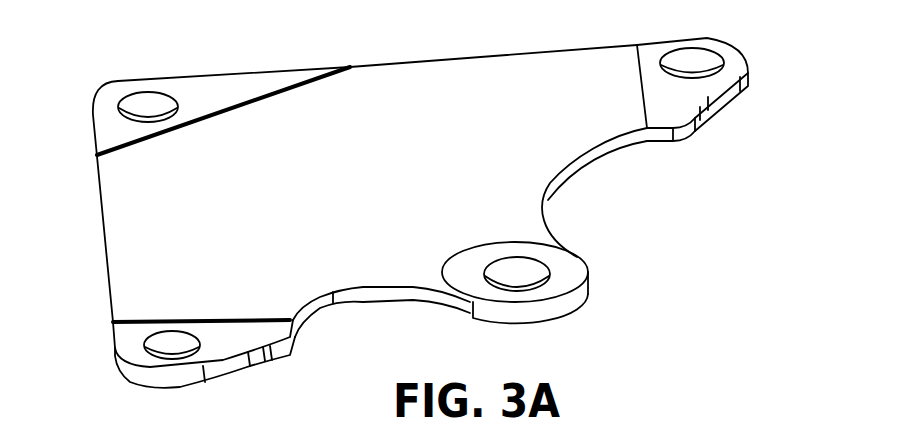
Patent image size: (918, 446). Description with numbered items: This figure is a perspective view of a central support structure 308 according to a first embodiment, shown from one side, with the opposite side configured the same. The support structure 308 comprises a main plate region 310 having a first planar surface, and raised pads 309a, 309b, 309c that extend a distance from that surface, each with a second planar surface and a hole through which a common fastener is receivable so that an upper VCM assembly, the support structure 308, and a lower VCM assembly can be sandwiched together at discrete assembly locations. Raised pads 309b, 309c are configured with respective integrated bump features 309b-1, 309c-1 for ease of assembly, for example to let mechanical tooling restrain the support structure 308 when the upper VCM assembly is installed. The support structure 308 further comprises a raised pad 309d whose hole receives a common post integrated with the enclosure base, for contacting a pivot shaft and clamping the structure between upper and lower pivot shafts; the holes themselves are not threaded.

The central support structure 308 is at (123, 238).
The raised pad 309a is at (212, 92).
The raised pad 309b is at (153, 360).
The integrated bump feature 309b-1 is at (288, 349).
The raised pad 309c is at (730, 57).
The integrated bump feature 309c-1 is at (685, 133).
The raised pad 309d is at (568, 268).
The main plate region 310 is at (435, 82).